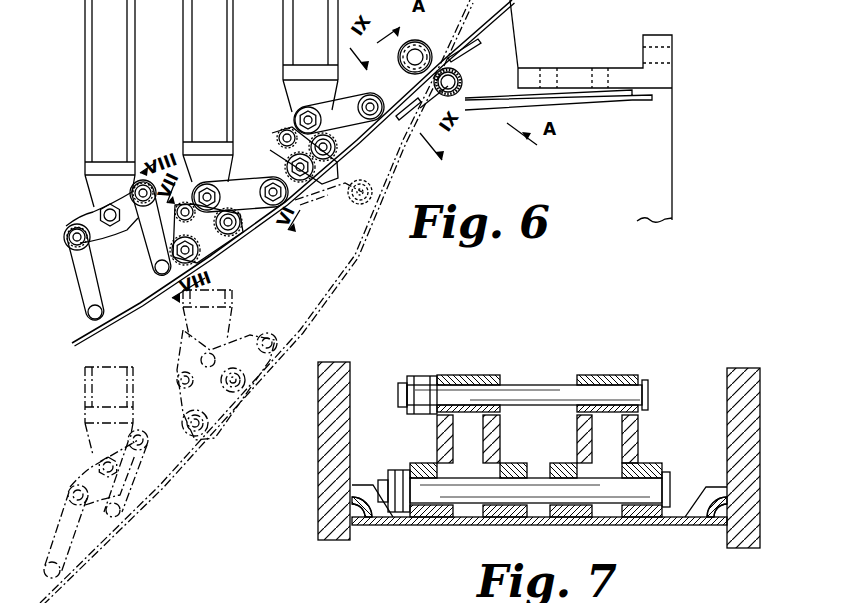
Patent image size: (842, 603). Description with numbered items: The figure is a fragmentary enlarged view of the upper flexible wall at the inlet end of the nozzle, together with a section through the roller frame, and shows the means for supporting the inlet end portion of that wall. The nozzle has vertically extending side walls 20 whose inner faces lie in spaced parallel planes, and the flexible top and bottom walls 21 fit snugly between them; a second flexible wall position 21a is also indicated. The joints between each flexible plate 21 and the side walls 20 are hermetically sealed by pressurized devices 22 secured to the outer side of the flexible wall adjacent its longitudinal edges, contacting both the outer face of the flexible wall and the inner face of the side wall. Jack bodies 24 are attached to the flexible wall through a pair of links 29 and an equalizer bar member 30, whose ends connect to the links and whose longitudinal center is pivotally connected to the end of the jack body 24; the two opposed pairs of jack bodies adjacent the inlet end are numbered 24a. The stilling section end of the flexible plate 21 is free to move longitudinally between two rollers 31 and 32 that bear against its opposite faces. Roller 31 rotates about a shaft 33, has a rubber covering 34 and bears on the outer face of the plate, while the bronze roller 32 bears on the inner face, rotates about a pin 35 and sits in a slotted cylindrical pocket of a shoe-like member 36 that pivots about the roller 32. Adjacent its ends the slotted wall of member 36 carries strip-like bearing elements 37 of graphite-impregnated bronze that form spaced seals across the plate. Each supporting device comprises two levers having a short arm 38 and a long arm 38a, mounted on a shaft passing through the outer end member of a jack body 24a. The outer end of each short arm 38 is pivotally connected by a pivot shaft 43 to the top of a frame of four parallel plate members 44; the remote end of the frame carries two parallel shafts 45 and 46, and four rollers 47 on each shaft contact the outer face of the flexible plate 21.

In FIG. 7, the side wall 20 is at (327, 406).
In FIG. 6, the flexible plate 21 is at (143, 300).
In FIG. 7, the flexible plate 21 is at (703, 528).
In FIG. 6, the lower rail 21a is at (178, 464).
In FIG. 7, the pressurized device 22 is at (362, 483).
In FIG. 6, the jack body 24 is at (130, 62).
In FIG. 6, the jack body 24a is at (230, 25).
In FIG. 6, the link 29 is at (80, 275).
In FIG. 6, the equalizer bar member 30 is at (87, 212).
In FIG. 6, the roller 31 is at (417, 55).
In FIG. 6, the bronze roller 32 is at (462, 78).
In FIG. 6, the shaft 33 is at (408, 65).
In FIG. 6, the rubber covering 34 is at (437, 32).
In FIG. 6, the pin 35 is at (420, 108).
In FIG. 6, the shoe-like member 36 is at (517, 62).
In FIG. 6, the bearing element 37 is at (474, 36).
In FIG. 6, the short arm 38 is at (282, 113).
In FIG. 7, the short arm 38 is at (468, 375).
In FIG. 6, the long arm 38a is at (363, 100).
In FIG. 6, the pivot shaft 43 is at (281, 138).
In FIG. 7, the pivot shaft 43 is at (535, 392).
In FIG. 6, the plate member 44 is at (212, 250).
In FIG. 7, the plate member 44 is at (488, 432).
In FIG. 6, the shaft 45 is at (320, 173).
In FIG. 6, the shaft 46 is at (337, 152).
In FIG. 7, the shaft 46 is at (540, 485).
In FIG. 6, the roller 47 is at (238, 232).
In FIG. 7, the roller 47 is at (415, 522).